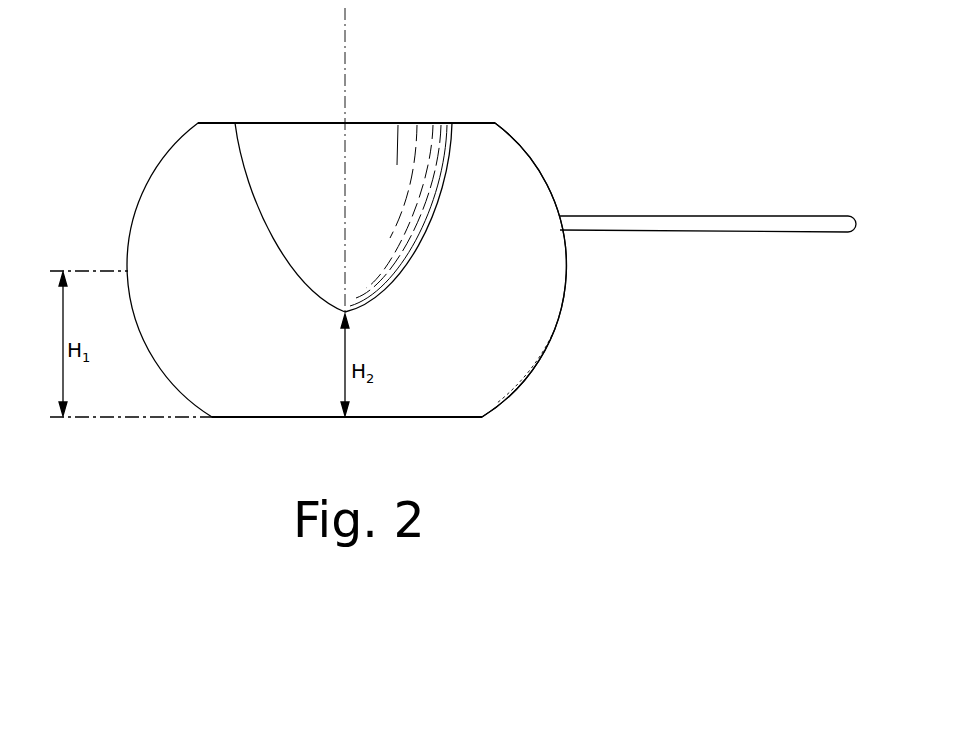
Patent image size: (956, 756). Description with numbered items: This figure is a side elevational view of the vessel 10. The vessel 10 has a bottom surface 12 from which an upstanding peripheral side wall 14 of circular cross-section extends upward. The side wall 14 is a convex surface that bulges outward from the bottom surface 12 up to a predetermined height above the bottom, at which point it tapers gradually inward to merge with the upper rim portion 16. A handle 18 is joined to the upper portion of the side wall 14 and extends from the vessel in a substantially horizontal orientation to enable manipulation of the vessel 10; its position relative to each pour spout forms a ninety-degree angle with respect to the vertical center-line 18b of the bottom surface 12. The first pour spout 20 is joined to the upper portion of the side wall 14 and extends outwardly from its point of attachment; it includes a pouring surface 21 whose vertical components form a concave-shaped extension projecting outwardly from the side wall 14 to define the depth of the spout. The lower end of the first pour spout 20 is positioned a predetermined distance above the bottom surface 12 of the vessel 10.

The vessel 10 is at (198, 108).
The bottom surface 12 is at (308, 419).
The side wall 14 is at (545, 347).
The upper rim portion 16 is at (470, 122).
The handle 18 is at (803, 212).
The vertical center-line 18b is at (348, 32).
The first pour spout 20 is at (422, 222).
The pouring surface 21 is at (318, 201).